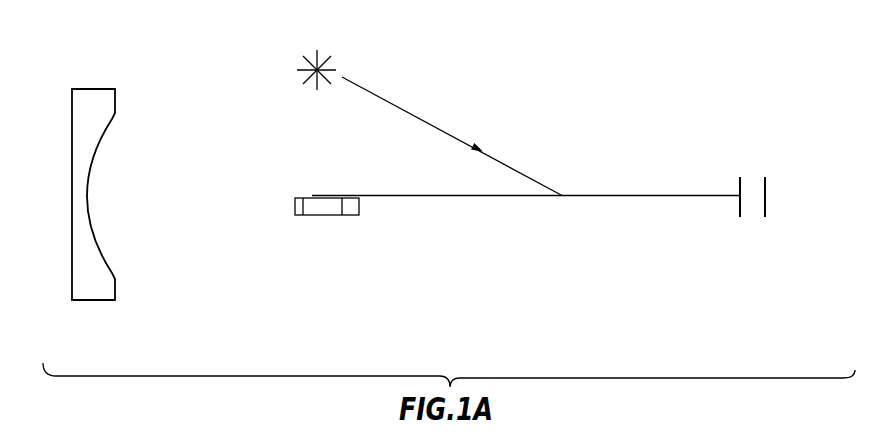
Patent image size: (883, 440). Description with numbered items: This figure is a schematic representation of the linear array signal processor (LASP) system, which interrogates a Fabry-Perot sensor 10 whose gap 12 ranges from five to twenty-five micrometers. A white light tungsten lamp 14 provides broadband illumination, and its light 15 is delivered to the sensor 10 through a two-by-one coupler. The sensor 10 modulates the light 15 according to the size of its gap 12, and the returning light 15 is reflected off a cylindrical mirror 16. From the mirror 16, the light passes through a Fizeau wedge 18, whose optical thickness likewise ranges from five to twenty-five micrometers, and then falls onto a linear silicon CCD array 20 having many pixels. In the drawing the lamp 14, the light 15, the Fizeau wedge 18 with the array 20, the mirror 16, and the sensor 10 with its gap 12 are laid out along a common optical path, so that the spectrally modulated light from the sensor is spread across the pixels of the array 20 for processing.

The Fabry-Perot sensor 10 is at (768, 207).
The gap 12 is at (751, 182).
The white light tungsten lamp 14 is at (312, 53).
The light 15 is at (427, 121).
The cylindrical mirror 16 is at (91, 301).
The Fizeau wedge 18 is at (311, 205).
The linear silicon CCD array 20 is at (352, 208).